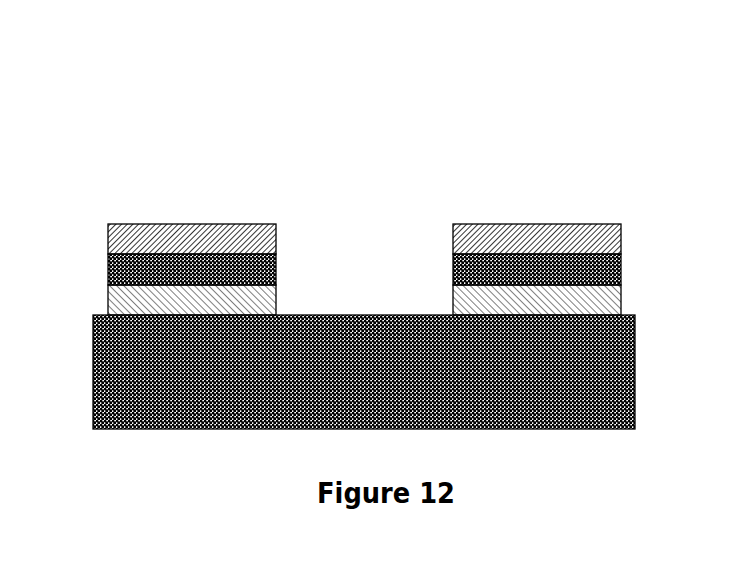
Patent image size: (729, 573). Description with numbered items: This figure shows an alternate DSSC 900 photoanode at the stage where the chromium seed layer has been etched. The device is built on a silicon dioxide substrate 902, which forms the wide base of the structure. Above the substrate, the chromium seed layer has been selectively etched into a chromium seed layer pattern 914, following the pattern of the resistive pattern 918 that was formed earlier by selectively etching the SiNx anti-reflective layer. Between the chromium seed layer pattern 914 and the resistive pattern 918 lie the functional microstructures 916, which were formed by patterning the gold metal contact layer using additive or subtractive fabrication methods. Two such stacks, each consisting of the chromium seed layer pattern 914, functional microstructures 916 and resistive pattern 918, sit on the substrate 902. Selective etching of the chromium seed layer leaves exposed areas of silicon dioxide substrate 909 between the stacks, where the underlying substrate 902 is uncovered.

The DSSC 900 is at (350, 108).
The silicon dioxide substrate 902 is at (572, 442).
The exposed areas of silicon dioxide substrate 909 is at (336, 261).
The chromium seed layer pattern 914 is at (88, 304).
The functional microstructures 916 is at (94, 262).
The resistive pattern 918 is at (167, 200).